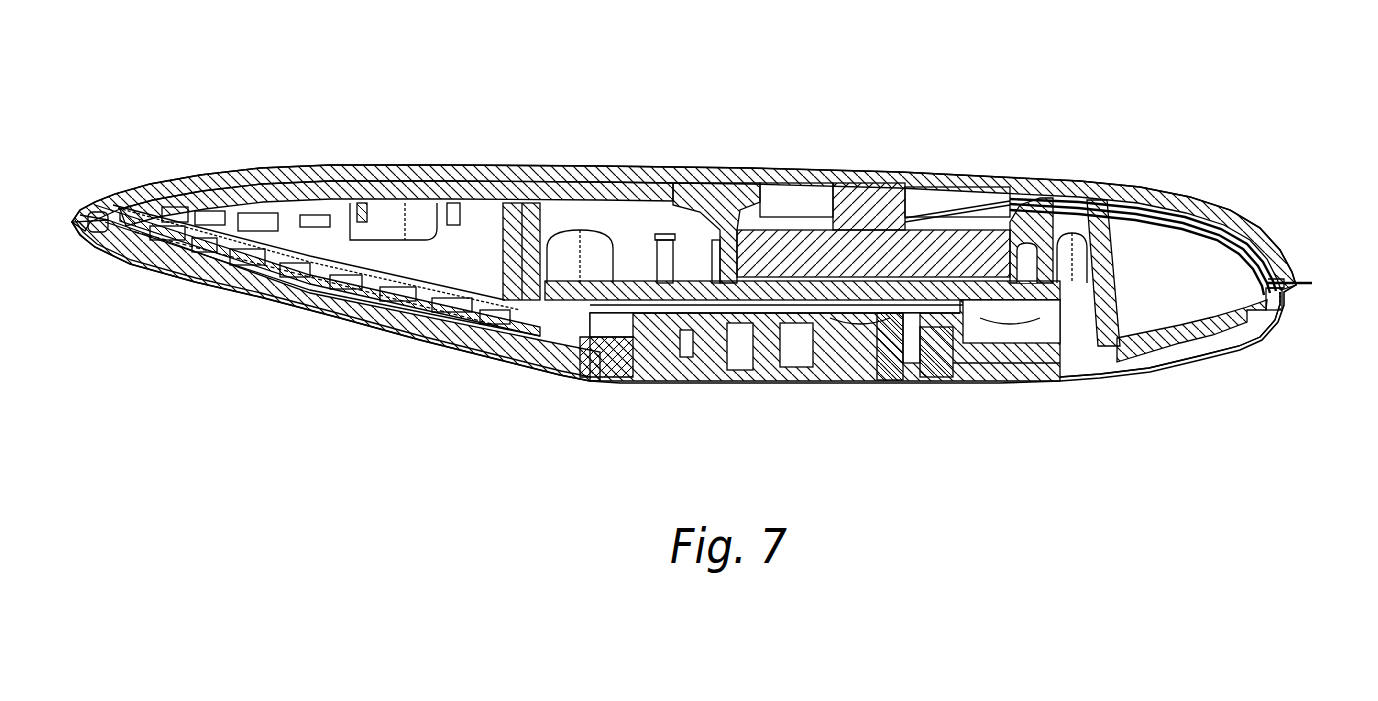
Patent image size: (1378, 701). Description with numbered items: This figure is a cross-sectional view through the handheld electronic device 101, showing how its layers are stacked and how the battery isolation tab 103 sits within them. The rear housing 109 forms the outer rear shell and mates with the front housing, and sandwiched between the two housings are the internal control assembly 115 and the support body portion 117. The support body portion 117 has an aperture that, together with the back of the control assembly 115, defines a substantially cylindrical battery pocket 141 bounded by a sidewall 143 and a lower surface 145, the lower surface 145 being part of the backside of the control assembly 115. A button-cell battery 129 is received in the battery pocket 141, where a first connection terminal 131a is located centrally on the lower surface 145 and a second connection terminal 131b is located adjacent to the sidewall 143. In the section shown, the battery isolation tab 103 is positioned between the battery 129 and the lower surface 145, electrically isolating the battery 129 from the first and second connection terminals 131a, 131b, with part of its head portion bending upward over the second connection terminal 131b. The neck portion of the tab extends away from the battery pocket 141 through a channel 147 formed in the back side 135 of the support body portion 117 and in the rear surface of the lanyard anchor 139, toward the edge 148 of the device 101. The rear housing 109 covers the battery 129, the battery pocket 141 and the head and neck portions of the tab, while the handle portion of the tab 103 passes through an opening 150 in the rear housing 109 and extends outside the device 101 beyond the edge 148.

The device 101 is at (178, 129).
The battery isolation tab 103 is at (1068, 197).
The rear housing 109 is at (318, 173).
The internal control assembly 115 is at (372, 305).
The support body portion 117 is at (410, 186).
The battery 129 is at (944, 216).
The first connection terminal 131a is at (920, 300).
The second connection terminal 131b is at (1018, 288).
The back side 135 is at (457, 196).
The lanyard anchor 139 is at (1181, 326).
The battery pocket 141 is at (701, 189).
The sidewall 143 is at (735, 199).
The lower surface 145 is at (762, 382).
The channel 147 is at (1230, 221).
The edge 148 is at (1287, 306).
The opening 150 is at (1282, 275).